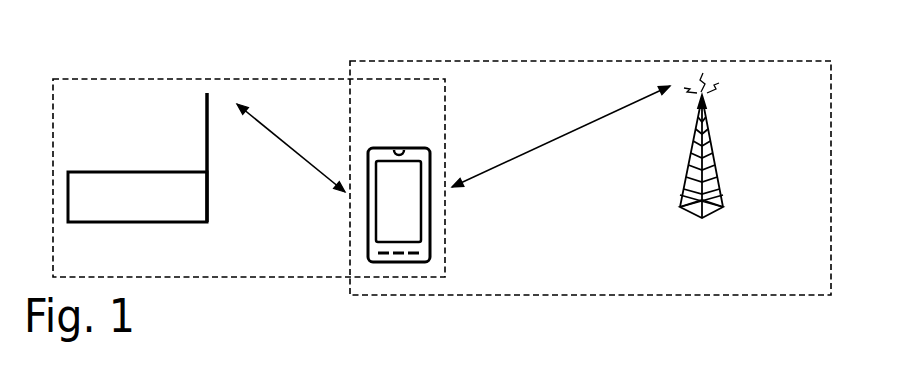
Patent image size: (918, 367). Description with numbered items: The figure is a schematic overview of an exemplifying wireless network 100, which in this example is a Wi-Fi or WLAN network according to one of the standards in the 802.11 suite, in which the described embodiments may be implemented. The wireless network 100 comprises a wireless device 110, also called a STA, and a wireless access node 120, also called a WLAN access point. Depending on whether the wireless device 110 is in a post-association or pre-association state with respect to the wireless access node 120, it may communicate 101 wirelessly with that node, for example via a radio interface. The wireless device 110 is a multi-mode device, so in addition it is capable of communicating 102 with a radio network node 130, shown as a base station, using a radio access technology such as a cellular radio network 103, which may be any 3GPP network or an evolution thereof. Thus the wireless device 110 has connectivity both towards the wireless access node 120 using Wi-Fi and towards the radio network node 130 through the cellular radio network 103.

The wireless network 100 is at (233, 72).
The communicating 101 is at (291, 148).
The communicating 102 is at (561, 136).
The cellular radio network 103 is at (590, 178).
The wireless device 110 is at (399, 205).
The wireless access node 120 is at (137, 157).
The radio network node 130 is at (747, 161).